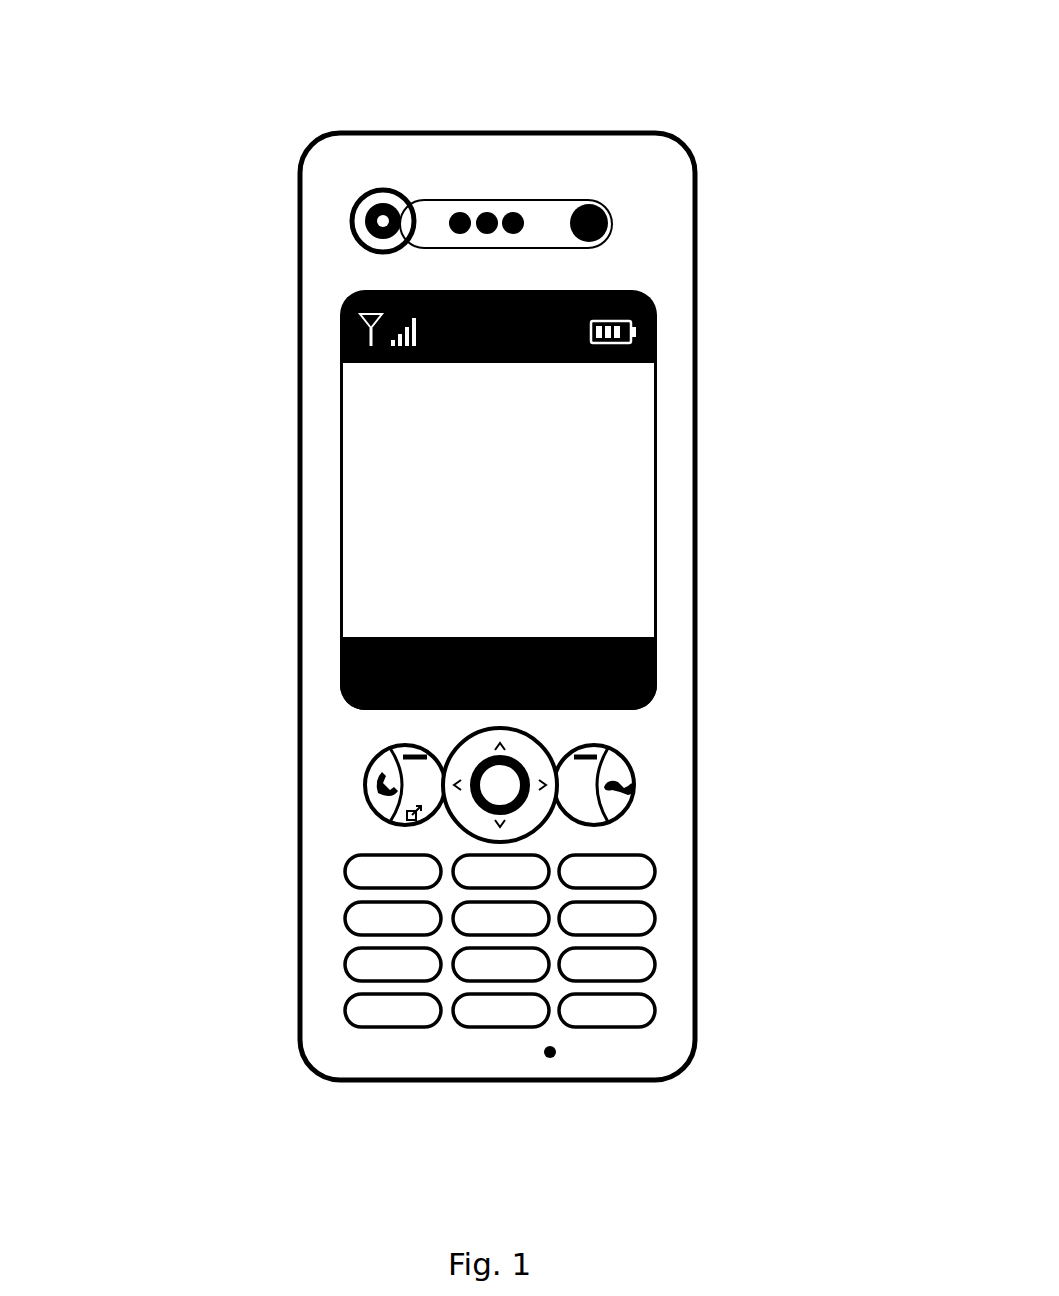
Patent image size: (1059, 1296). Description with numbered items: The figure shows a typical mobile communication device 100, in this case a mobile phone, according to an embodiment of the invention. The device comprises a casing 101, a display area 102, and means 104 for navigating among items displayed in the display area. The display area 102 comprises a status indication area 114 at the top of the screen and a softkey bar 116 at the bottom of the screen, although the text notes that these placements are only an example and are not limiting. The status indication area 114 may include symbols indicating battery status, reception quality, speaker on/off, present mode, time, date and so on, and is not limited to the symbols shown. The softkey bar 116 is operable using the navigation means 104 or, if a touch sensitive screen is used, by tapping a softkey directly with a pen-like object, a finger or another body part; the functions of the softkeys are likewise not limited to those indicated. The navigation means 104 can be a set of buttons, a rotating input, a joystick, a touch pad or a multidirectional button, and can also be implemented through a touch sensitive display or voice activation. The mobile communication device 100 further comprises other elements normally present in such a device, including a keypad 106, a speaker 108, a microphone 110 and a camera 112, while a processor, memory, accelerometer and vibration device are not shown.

The mobile communication device 100 is at (618, 112).
The casing 101 is at (300, 448).
The display area 102 is at (597, 528).
The means for navigating 104 is at (547, 735).
The keypad 106 is at (458, 952).
The speaker 108 is at (483, 212).
The microphone 110 is at (545, 1056).
The camera 112 is at (362, 195).
The status indication area 114 is at (357, 305).
The softkey bar 116 is at (340, 648).